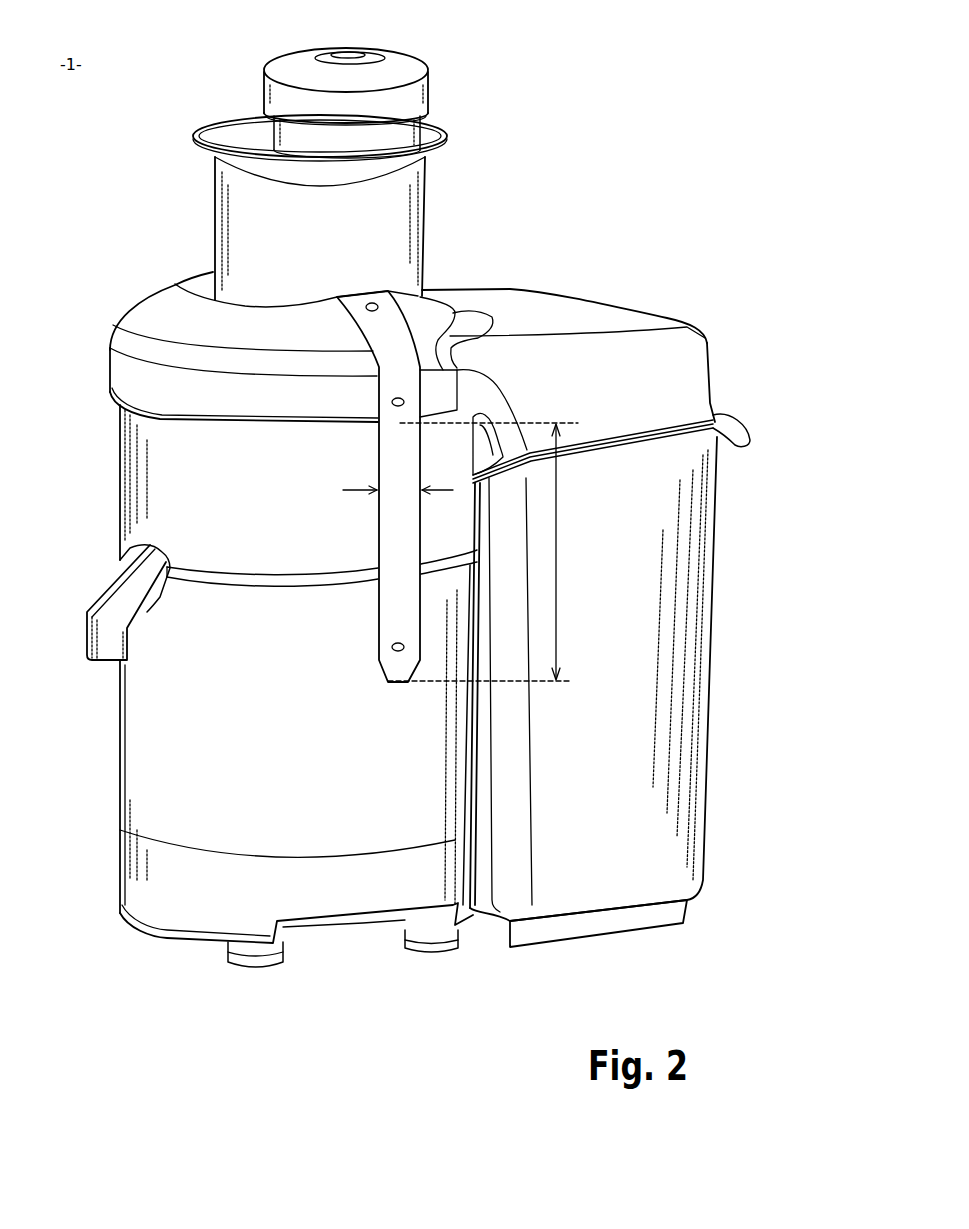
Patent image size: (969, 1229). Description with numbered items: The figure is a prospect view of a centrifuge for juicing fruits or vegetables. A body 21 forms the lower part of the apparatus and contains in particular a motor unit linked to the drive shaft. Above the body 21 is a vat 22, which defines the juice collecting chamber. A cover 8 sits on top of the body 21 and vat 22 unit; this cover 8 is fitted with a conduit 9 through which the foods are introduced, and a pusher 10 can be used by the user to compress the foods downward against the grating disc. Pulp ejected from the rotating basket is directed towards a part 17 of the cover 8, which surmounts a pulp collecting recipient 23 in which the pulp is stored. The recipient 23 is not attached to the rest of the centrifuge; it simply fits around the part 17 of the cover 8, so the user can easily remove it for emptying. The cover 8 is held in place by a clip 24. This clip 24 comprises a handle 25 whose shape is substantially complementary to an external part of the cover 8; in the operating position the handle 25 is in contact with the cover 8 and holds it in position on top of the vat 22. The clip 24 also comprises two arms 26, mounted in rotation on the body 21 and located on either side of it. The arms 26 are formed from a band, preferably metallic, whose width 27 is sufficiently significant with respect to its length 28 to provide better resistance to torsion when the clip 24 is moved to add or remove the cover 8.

The cover 8 is at (510, 287).
The conduit 9 is at (426, 212).
The pusher 10 is at (395, 65).
The part of the cover 17 is at (660, 388).
The body 21 is at (120, 773).
The vat 22 is at (140, 455).
The pulp collecting recipient 23 is at (712, 720).
The clip 24 is at (390, 412).
The handle 25 is at (160, 312).
The arms 26 is at (392, 562).
The width 27 is at (343, 490).
The length 28 is at (557, 537).